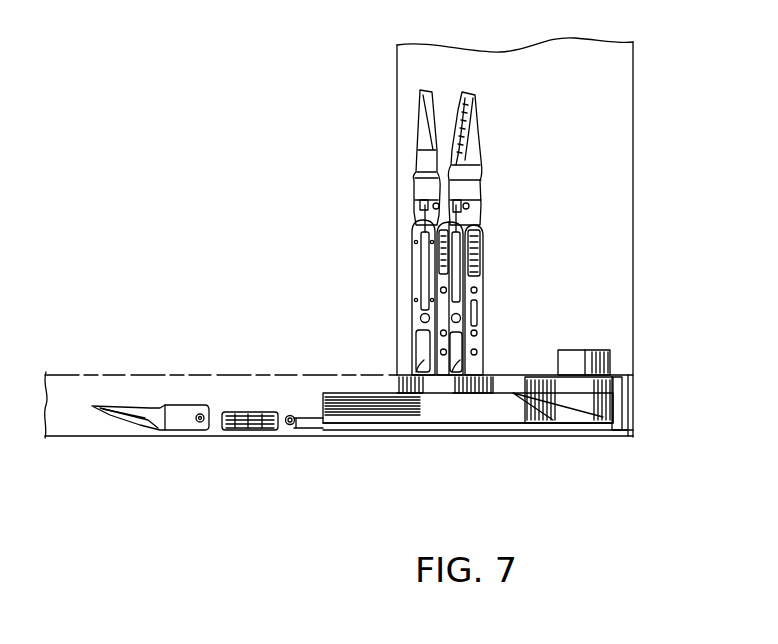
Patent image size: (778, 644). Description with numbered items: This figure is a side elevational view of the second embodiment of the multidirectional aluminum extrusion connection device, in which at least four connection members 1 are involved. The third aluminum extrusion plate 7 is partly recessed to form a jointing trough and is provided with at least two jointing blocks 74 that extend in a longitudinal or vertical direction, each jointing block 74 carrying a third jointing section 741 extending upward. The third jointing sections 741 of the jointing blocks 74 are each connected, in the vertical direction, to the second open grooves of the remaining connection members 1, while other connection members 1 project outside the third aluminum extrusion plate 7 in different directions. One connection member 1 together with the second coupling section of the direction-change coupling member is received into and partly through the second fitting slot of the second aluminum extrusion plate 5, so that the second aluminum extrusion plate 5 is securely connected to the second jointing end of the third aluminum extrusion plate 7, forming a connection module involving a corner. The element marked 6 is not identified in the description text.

The connection member 1 is at (415, 225).
The third jointing section 741 is at (455, 342).
The jointing block 74 is at (381, 425).
The second aluminum extrusion plate 5 is at (481, 407).
The locking pin 6 is at (303, 425).
The third aluminum extrusion plate 7 is at (590, 398).